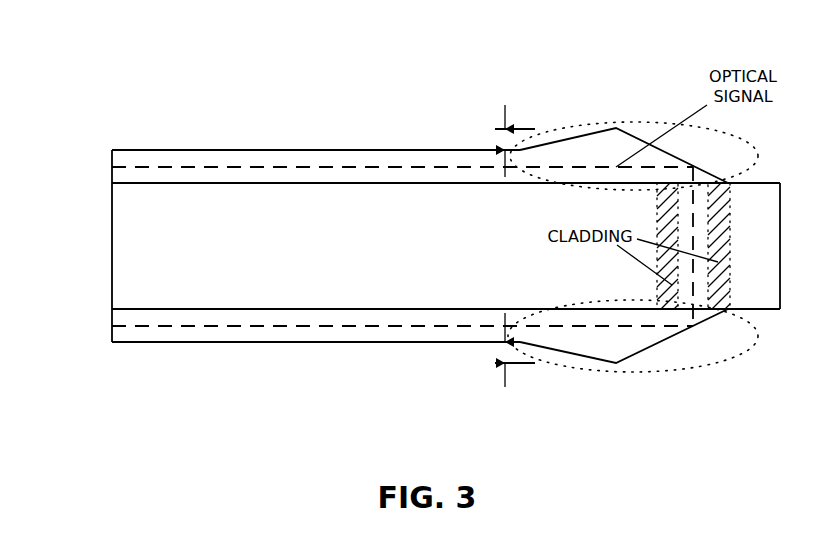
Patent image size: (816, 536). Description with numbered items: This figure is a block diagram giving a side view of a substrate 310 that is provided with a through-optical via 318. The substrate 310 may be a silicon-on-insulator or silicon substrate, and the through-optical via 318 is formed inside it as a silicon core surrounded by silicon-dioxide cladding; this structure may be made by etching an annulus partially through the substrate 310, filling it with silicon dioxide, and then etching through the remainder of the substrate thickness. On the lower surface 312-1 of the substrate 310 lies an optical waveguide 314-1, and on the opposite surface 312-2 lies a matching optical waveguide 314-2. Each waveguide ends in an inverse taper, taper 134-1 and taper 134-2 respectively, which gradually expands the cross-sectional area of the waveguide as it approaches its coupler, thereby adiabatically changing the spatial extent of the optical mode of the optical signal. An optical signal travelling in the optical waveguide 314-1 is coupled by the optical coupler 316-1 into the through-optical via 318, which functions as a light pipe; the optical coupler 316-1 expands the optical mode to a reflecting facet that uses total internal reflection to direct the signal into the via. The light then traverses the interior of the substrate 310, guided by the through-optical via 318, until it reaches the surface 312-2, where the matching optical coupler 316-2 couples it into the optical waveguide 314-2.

The substrate 310 is at (431, 265).
The surface 312-1 is at (155, 308).
The surface 312-2 is at (357, 183).
The optical waveguide 314-1 is at (242, 342).
The optical waveguide 314-2 is at (243, 150).
The taper 134-1 is at (503, 350).
The taper 134-2 is at (502, 143).
The optical coupler 316-1 is at (640, 372).
The optical coupler 316-2 is at (643, 120).
The through-optical via 318 is at (702, 285).